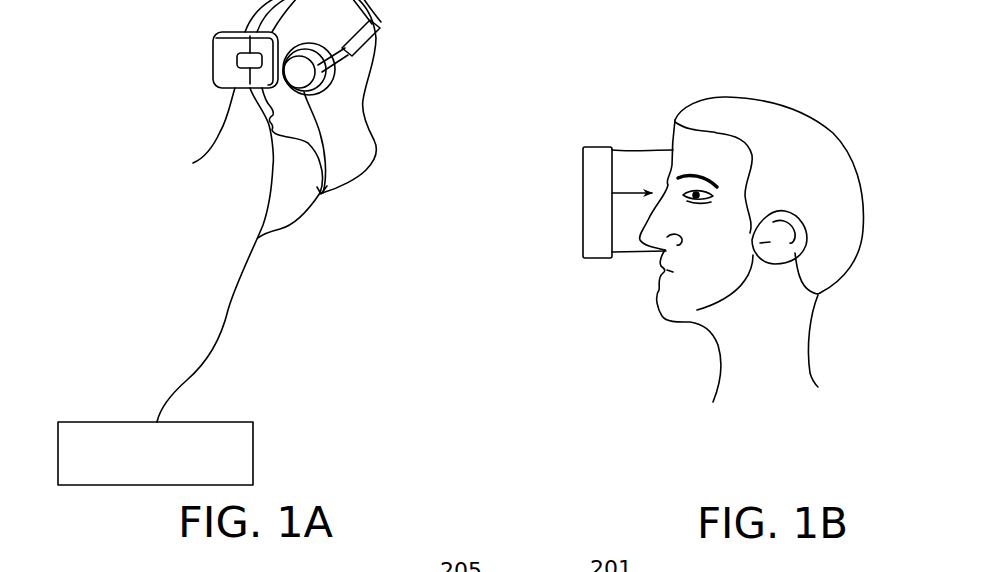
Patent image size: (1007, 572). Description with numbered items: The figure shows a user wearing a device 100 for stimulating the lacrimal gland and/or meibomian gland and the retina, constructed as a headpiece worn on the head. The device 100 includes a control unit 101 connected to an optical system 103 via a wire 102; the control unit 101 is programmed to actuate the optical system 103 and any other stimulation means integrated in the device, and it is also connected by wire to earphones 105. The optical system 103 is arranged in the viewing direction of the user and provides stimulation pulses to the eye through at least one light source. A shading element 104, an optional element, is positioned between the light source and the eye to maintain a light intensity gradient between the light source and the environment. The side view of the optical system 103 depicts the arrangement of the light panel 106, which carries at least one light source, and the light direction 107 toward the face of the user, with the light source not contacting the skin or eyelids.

In FIG. 1A, the device 100 is at (80, 153).
In FIG. 1A, the control unit 101 is at (155, 453).
In FIG. 1A, the wire 102 is at (222, 292).
In FIG. 1A, the optical system 103 is at (182, 48).
In FIG. 1A, the shading element 104 is at (194, 163).
In FIG. 1A, the earphones 105 is at (381, 73).
In FIG. 1B, the light panel 106 is at (583, 228).
In FIG. 1B, the light direction 107 is at (628, 188).